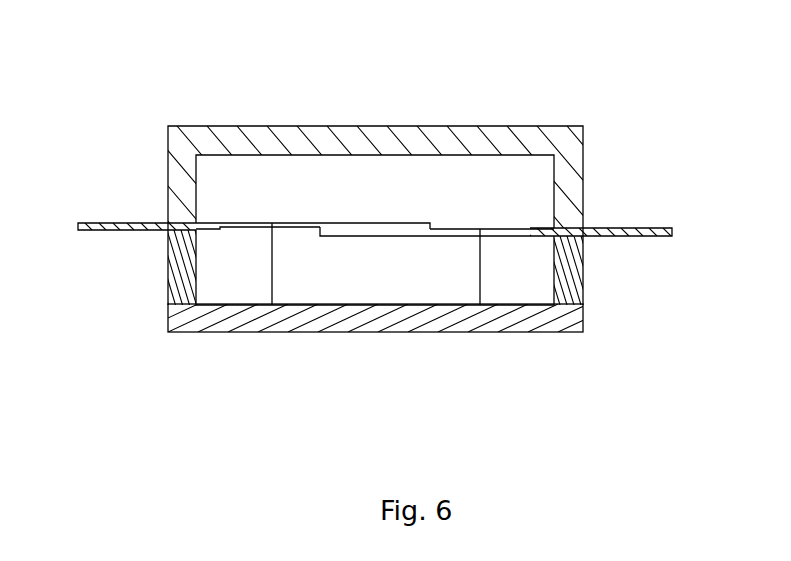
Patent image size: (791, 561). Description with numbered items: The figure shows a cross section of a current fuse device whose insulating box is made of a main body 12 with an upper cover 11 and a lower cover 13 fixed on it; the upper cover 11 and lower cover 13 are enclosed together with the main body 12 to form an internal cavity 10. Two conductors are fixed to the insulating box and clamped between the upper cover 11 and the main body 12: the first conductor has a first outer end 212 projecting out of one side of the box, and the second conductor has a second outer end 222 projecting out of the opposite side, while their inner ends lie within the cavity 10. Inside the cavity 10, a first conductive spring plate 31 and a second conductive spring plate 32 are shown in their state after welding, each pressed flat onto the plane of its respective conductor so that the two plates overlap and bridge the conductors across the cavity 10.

The cavity 10 is at (313, 280).
The upper cover 11 is at (578, 126).
The main body 12 is at (523, 275).
The lower cover 13 is at (467, 333).
The first conductive spring plate 31 is at (459, 228).
The second conductive spring plate 32 is at (300, 223).
The first outer end 212 is at (632, 228).
The second outer end 222 is at (112, 228).